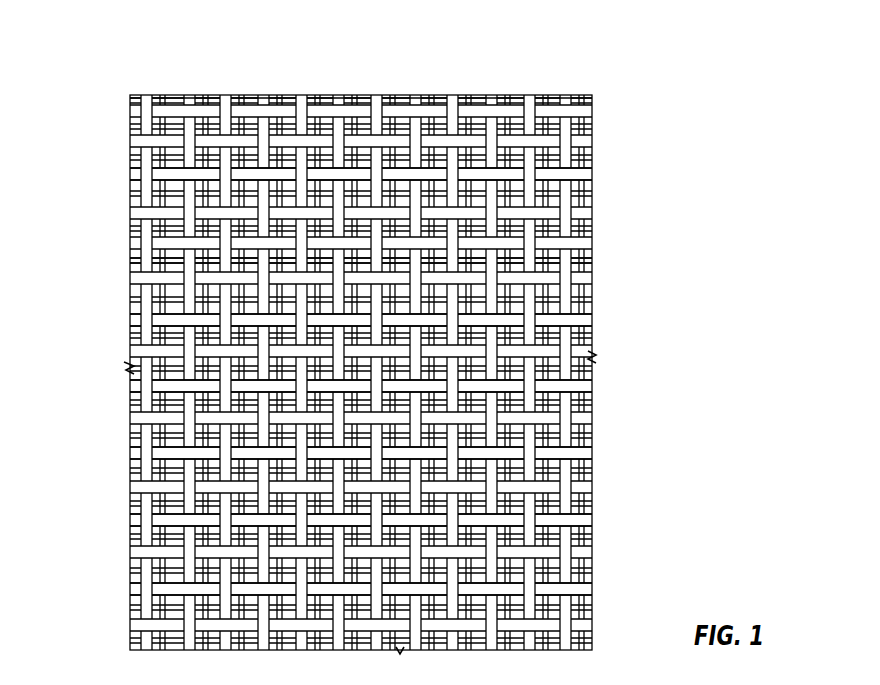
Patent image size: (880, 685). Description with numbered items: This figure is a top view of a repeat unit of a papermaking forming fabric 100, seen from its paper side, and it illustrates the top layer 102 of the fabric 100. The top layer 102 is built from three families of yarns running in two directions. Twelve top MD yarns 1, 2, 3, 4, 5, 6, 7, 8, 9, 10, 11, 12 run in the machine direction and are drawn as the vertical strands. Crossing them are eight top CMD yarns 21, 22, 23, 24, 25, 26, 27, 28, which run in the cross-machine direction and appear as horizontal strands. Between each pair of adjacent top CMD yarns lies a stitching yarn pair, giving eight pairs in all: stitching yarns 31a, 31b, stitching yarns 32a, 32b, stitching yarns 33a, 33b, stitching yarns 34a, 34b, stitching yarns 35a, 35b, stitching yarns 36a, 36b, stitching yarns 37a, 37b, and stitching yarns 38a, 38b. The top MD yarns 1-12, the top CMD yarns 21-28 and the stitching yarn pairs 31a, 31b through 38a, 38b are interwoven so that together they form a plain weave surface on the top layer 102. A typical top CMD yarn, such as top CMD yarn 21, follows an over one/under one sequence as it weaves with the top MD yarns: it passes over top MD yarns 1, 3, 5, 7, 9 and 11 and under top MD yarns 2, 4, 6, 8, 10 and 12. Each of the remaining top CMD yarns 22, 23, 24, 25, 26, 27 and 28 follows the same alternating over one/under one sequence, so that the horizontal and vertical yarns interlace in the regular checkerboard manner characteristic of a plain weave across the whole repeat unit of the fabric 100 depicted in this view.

The top MD yarn 1 is at (148, 106).
The top MD yarn 2 is at (190, 124).
The top MD yarn 3 is at (225, 110).
The top MD yarn 4 is at (267, 117).
The top MD yarn 5 is at (303, 102).
The top MD yarn 6 is at (340, 122).
The top MD yarn 7 is at (378, 105).
The top MD yarn 8 is at (416, 118).
The top MD yarn 9 is at (453, 104).
The top MD yarn 10 is at (492, 118).
The top MD yarn 11 is at (530, 103).
The top MD yarn 12 is at (566, 118).
The top CMD yarn 21 is at (585, 152).
The top CMD yarn 22 is at (585, 218).
The top CMD yarn 23 is at (585, 288).
The top CMD yarn 24 is at (598, 357).
The top CMD yarn 25 is at (585, 425).
The top CMD yarn 26 is at (590, 498).
The top CMD yarn 27 is at (585, 572).
The top CMD yarn 28 is at (585, 636).
The stitching yarn 31a is at (253, 108).
The stitching yarn 31b is at (165, 118).
The stitching yarn 32a is at (168, 183).
The stitching yarn 32b is at (570, 186).
The stitching yarn 33a is at (250, 243).
The stitching yarn 33b is at (190, 258).
The stitching yarn 34a is at (580, 323).
The stitching yarn 34b is at (165, 325).
The stitching yarn 35a is at (162, 383).
The stitching yarn 35b is at (245, 396).
The stitching yarn 36a is at (580, 453).
The stitching yarn 36b is at (220, 456).
The stitching yarn 37a is at (165, 518).
The stitching yarn 37b is at (245, 528).
The stitching yarn 38a is at (172, 589).
The stitching yarn 38b is at (570, 598).
The papermaking forming fabric 100 is at (731, 113).
The top layer 102 is at (699, 357).